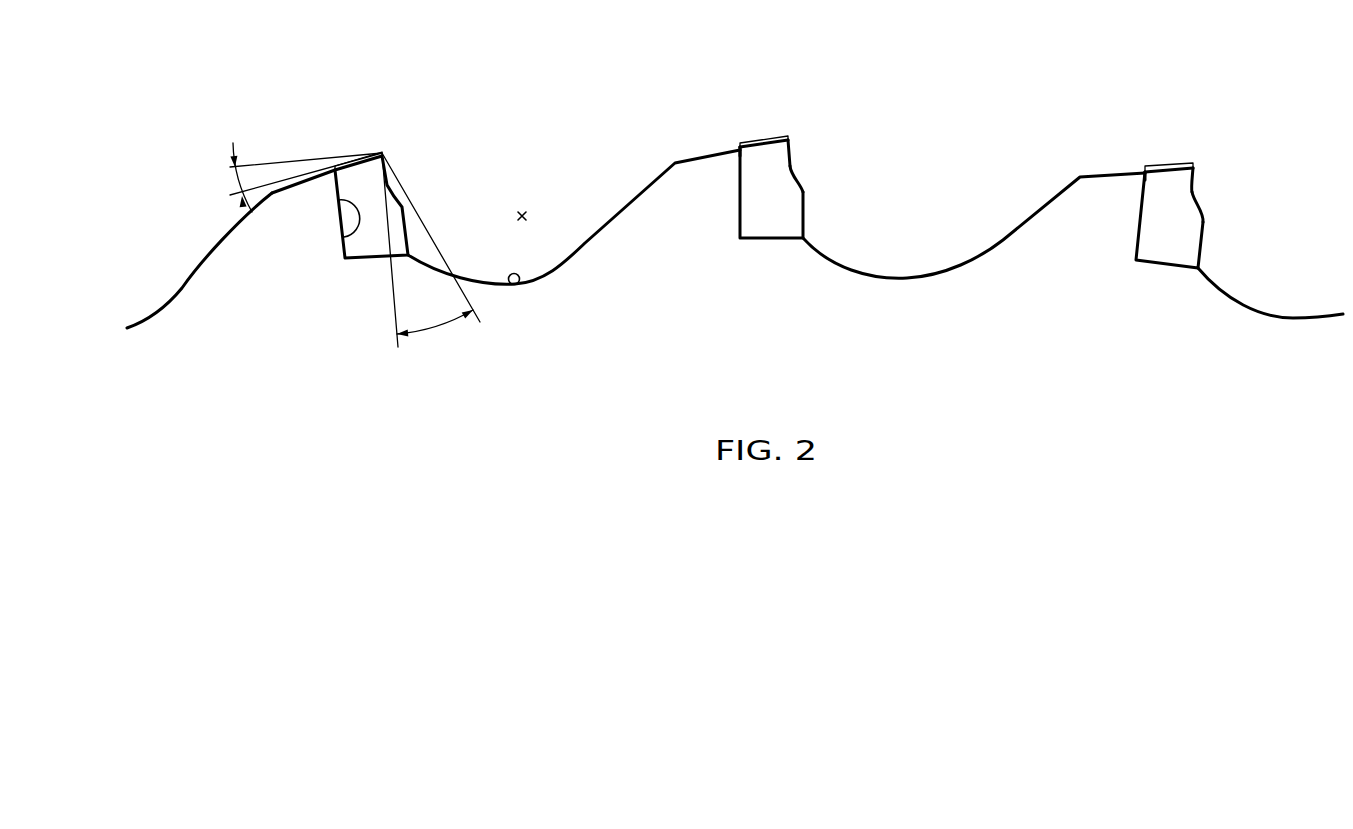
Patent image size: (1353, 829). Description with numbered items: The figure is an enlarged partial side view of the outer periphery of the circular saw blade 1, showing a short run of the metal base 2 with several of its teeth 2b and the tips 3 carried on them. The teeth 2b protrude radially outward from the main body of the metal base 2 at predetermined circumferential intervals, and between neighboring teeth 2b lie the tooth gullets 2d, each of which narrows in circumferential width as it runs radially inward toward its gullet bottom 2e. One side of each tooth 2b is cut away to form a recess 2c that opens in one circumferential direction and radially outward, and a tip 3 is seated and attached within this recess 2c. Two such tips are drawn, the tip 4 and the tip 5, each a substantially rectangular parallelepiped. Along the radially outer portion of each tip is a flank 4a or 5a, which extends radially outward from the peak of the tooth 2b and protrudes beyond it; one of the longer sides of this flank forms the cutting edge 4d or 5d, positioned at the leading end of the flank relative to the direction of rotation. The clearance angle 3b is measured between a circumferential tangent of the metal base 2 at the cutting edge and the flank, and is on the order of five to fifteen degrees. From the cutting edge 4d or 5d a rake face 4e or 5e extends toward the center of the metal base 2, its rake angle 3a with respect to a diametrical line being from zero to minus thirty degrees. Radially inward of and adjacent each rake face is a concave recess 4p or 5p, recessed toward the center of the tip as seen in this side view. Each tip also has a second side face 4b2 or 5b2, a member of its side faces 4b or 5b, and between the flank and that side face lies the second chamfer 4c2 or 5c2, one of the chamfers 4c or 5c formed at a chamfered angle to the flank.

The circular saw blade 1 is at (258, 108).
The metal base 2 is at (663, 245).
The teeth 2b is at (287, 223).
The recess 2c is at (344, 237).
The tooth gullet 2d is at (522, 212).
The gullet bottom 2e is at (512, 288).
The tip 3 is at (835, 148).
The rake angle 3a is at (431, 259).
The clearance angle 3b is at (291, 177).
The tip 4 is at (367, 147).
The flank 4a is at (1177, 162).
The side face 4b is at (1235, 220).
The second side face 4b2 is at (1172, 243).
The chamfer 4c is at (1132, 115).
The second chamfer 4c2 is at (1157, 163).
The cutting edge 4d is at (1193, 165).
The rake face 4e is at (1196, 173).
The concave recess 4p is at (1198, 202).
The tip 5 is at (763, 127).
The flank 5a is at (773, 137).
The side face 5b is at (841, 192).
The second side face 5b2 is at (777, 218).
The chamfer 5c is at (729, 92).
The second chamfer 5c2 is at (753, 142).
The cutting edge 5d is at (788, 137).
The rake face 5e is at (789, 142).
The concave recess 5p is at (797, 182).